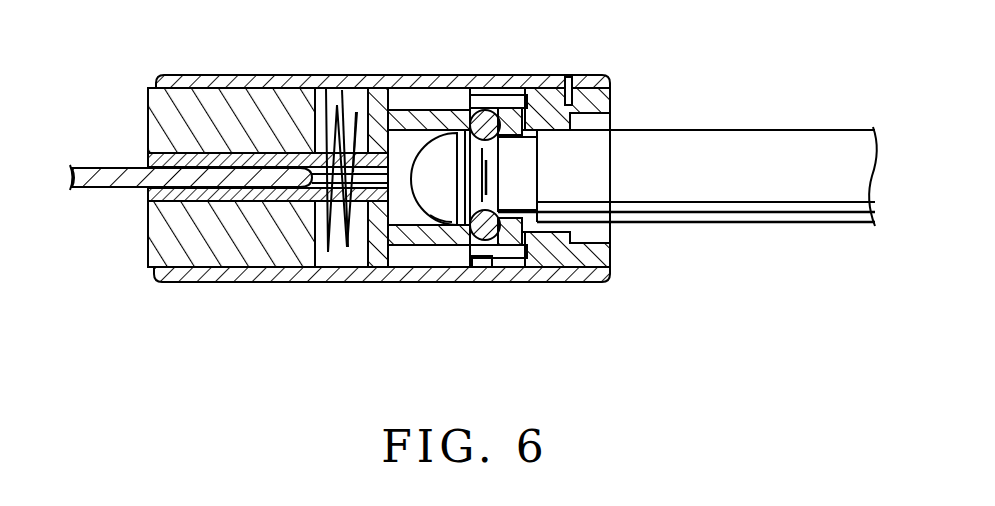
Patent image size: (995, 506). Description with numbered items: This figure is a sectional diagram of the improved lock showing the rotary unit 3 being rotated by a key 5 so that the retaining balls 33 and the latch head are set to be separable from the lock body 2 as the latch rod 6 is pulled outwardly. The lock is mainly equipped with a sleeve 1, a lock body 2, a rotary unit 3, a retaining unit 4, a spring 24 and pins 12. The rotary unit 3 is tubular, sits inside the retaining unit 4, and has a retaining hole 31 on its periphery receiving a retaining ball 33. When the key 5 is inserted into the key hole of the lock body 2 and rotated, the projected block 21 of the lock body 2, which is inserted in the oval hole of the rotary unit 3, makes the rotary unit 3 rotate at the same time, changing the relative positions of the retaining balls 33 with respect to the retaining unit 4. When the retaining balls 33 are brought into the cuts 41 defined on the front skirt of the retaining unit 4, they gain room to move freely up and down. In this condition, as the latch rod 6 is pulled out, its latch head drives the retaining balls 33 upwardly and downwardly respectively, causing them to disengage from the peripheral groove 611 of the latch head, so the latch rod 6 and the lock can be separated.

The sleeve 1 is at (293, 272).
The lock body 2 is at (158, 262).
The rotary unit 3 is at (378, 262).
The retaining unit 4 is at (572, 255).
The key 5 is at (104, 178).
The latch rod 6 is at (747, 145).
The pin 12 is at (567, 76).
The projected block 21 is at (323, 262).
The spring 24 is at (336, 128).
The retaining hole 31 is at (462, 112).
The retaining ball 33 is at (489, 110).
The cut 41 is at (490, 262).
The peripheral groove 611 is at (493, 182).